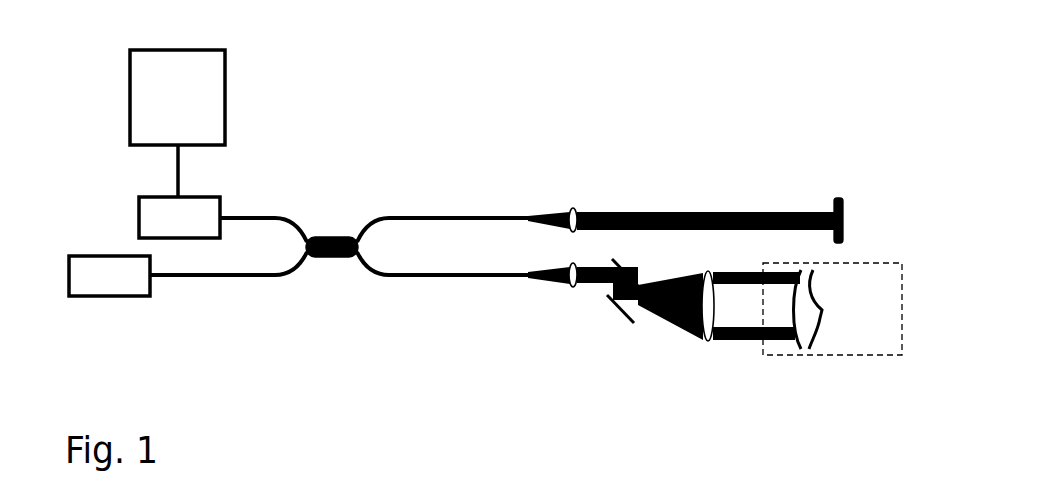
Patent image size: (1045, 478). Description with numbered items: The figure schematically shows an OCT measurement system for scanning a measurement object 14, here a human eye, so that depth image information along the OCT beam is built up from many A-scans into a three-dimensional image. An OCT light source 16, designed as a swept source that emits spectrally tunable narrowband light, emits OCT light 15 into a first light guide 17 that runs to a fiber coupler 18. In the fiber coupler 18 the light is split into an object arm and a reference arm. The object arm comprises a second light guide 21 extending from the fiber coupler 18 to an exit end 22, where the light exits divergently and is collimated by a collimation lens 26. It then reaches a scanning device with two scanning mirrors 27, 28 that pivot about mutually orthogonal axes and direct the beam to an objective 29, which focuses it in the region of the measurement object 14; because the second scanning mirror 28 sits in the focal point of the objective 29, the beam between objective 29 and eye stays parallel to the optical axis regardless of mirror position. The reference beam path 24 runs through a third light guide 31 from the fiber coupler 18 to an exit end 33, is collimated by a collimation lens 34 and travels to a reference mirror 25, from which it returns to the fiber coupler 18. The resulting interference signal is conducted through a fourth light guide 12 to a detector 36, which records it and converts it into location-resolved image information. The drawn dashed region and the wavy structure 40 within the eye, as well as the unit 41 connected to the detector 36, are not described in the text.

The control/evaluation unit 41 is at (228, 80).
The detector 36 is at (120, 202).
The OCT light source 16 is at (110, 302).
The fourth light guide 12 is at (250, 208).
The first light guide 17 is at (205, 285).
The fiber coupler 18 is at (322, 232).
The third light guide 31 is at (420, 210).
The second light guide 21 is at (402, 283).
The exit end 33 is at (525, 210).
The exit end 22 is at (530, 283).
The collimation lens 34 is at (575, 207).
The collimation lens 26 is at (566, 270).
The reference beam path 24 is at (678, 208).
The reference mirror 25 is at (838, 195).
The scanning mirror 27 is at (618, 261).
The second scanning mirror 28 is at (613, 315).
The OCT light 15 is at (733, 347).
The objective 29 is at (708, 345).
The tissue/object structure 40 is at (802, 352).
The measurement object 14 is at (882, 358).